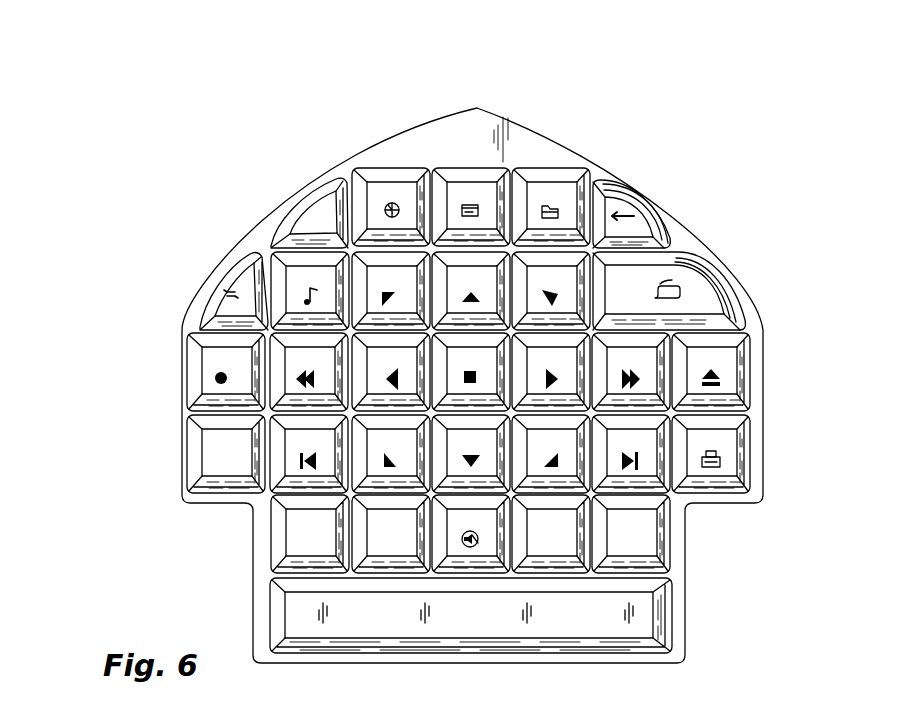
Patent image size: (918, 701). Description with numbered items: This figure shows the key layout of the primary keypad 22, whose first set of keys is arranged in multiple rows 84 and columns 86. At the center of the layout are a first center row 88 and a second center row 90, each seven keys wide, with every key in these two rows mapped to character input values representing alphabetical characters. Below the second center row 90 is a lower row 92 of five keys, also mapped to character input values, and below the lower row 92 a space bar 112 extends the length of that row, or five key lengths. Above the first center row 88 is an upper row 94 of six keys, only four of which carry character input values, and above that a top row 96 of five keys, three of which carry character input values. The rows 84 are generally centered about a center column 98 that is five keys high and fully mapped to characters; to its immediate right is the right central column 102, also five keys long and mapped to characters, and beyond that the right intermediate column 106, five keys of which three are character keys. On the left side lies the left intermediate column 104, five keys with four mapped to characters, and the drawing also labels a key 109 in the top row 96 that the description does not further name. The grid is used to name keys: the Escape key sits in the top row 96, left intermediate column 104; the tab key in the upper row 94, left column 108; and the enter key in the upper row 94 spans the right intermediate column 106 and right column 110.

The primary keypad 22 is at (812, 296).
The rows 84 is at (105, 218).
The columns 86 is at (745, 82).
The first center row 88 is at (177, 371).
The second center row 90 is at (177, 448).
The lower row 92 is at (237, 533).
The upper row 94 is at (191, 293).
The top row 96 is at (193, 215).
The center column 98 is at (470, 156).
The right central column 102 is at (549, 156).
The left intermediate column 104 is at (315, 176).
The right intermediate column 106 is at (635, 181).
The left column 108 is at (232, 247).
The I key 109 is at (391, 156).
The right column 110 is at (729, 246).
The space bar 112 is at (648, 625).